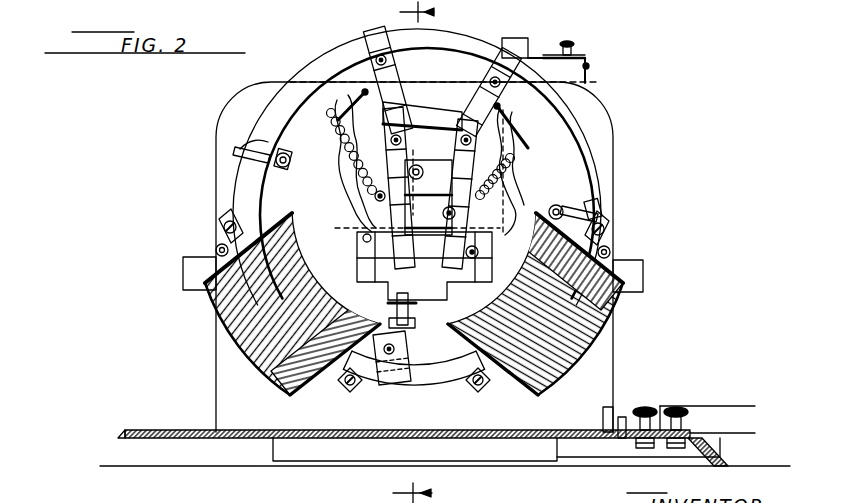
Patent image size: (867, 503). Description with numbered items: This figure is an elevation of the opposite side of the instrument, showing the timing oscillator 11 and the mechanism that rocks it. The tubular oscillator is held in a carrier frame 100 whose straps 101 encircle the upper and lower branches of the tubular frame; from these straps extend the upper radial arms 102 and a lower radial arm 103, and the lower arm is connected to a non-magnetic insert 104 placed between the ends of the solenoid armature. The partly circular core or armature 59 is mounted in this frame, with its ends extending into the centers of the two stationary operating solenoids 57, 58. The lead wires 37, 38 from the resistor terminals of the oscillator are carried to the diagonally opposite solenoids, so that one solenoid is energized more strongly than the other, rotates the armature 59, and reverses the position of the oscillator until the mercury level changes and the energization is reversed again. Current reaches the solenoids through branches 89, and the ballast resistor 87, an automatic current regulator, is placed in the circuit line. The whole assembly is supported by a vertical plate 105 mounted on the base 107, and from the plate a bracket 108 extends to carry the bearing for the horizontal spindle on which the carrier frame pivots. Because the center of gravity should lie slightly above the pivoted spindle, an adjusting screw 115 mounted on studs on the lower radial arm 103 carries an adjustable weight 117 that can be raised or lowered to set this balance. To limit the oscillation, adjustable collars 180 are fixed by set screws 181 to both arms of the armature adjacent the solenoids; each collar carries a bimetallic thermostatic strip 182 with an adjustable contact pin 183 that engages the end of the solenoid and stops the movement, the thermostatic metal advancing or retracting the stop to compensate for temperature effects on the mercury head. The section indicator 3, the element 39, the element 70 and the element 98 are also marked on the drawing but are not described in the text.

The section line 3- 3 is at (421, 252).
The timing oscillator 11 is at (338, 183).
The lead wire 37 is at (448, 320).
The lead wire 38 is at (310, 225).
The pivot plate 39 is at (346, 162).
The operating solenoid 57 is at (245, 323).
The operating solenoid 58 is at (612, 316).
The core or armature 59 is at (462, 44).
The base box 70 is at (325, 461).
The ballast resistor 87 is at (587, 65).
The branch 89 is at (183, 273).
The coil spring 98 is at (518, 164).
The carrier frame 100 is at (456, 83).
The strap 101 is at (560, 130).
The upper radial arm 102 is at (366, 72).
The lower radial arm 103 is at (407, 356).
The non-magnetic insert 104 is at (437, 417).
The vertical plate 105 is at (606, 393).
The base 107 is at (132, 432).
The bracket 108 is at (430, 107).
The adjusting screw 115 is at (408, 305).
The adjustable weight 117 is at (408, 325).
The adjustable collar 180 is at (248, 160).
The set screw 181 is at (232, 151).
The bimetallic thermostatic strip 182 is at (286, 170).
The adjustable contact pin 183 is at (256, 184).